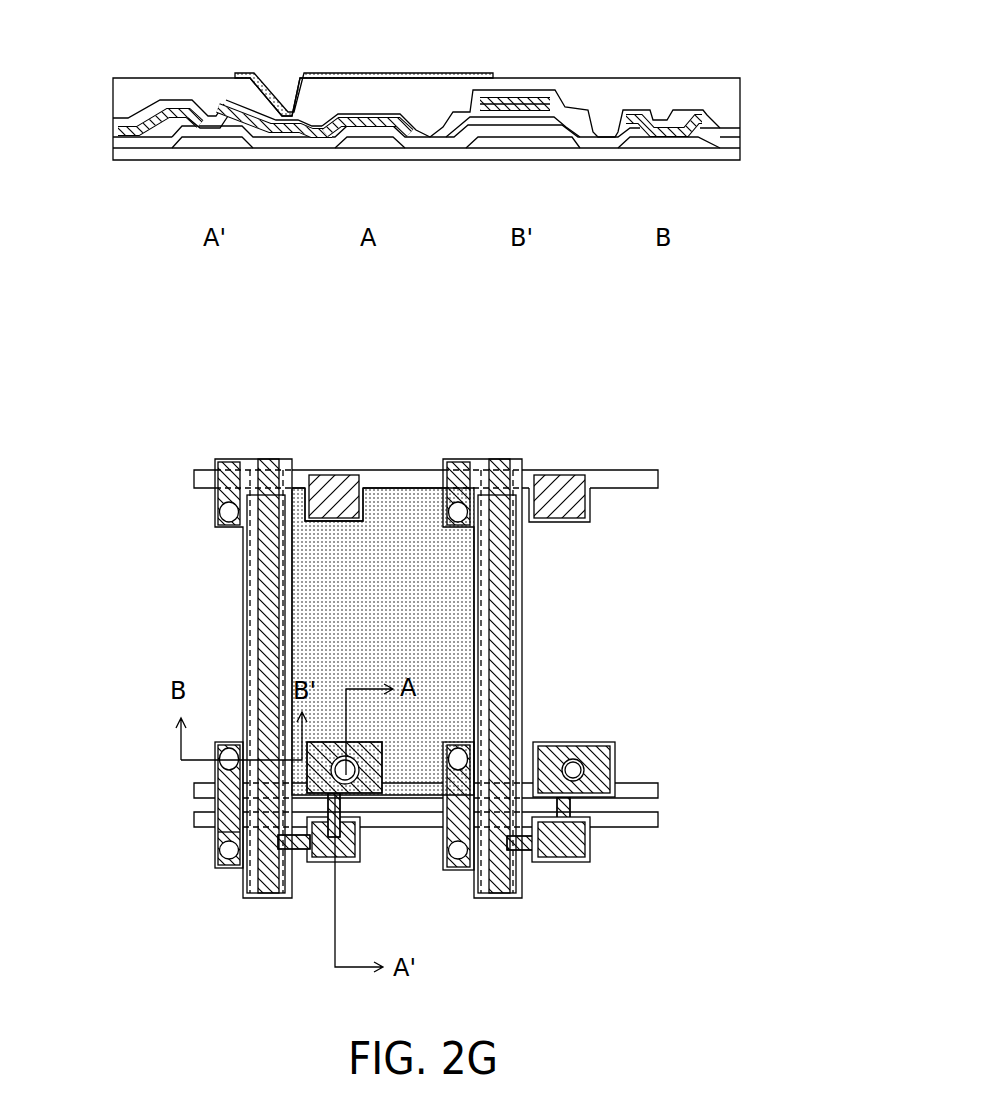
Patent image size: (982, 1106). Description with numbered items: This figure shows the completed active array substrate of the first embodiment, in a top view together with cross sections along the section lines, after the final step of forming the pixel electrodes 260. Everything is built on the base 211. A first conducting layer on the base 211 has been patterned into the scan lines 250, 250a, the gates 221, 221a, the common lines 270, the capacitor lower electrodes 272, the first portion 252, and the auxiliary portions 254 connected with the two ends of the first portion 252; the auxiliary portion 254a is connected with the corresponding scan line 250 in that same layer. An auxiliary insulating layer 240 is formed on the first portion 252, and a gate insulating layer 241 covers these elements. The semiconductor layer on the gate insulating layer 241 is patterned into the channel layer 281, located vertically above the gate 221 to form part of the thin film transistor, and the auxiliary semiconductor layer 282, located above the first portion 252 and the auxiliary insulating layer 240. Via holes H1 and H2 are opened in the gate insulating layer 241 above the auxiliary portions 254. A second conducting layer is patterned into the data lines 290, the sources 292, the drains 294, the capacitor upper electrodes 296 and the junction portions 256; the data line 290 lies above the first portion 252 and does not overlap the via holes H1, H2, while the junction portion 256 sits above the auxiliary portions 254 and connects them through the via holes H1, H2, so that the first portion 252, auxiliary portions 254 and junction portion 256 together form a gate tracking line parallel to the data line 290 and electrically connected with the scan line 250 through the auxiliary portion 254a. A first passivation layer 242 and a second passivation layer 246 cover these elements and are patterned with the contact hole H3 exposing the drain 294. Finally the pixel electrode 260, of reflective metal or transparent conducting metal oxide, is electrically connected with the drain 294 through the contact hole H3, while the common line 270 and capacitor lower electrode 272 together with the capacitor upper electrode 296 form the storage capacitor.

The base 211 is at (128, 155).
The gate 221 is at (220, 149).
The gate 221a is at (336, 521).
The auxiliary insulating layer 240 is at (568, 145).
The gate insulating layer 241 is at (730, 148).
The first passivation layer 242 is at (740, 131).
The second passivation layer 246 is at (722, 78).
The scan line 250 is at (658, 820).
The scan line 250a is at (658, 478).
The first portion 252 is at (507, 143).
The auxiliary portion 254 is at (665, 144).
The auxiliary portion 254a is at (216, 866).
The junction portion 256 is at (637, 120).
The pixel electrode 260 is at (438, 74).
The common line 270 is at (658, 790).
The capacitor lower electrode 272 is at (372, 149).
The channel layer 281 is at (180, 112).
The auxiliary semiconductor layer 282 is at (545, 103).
The data line 290 is at (500, 100).
The source 292 is at (140, 122).
The drain 294 is at (305, 122).
The capacitor upper electrode 296 is at (383, 118).
The via hole H1 is at (224, 750).
The via hole H2 is at (217, 506).
The contact hole H3 is at (320, 742).